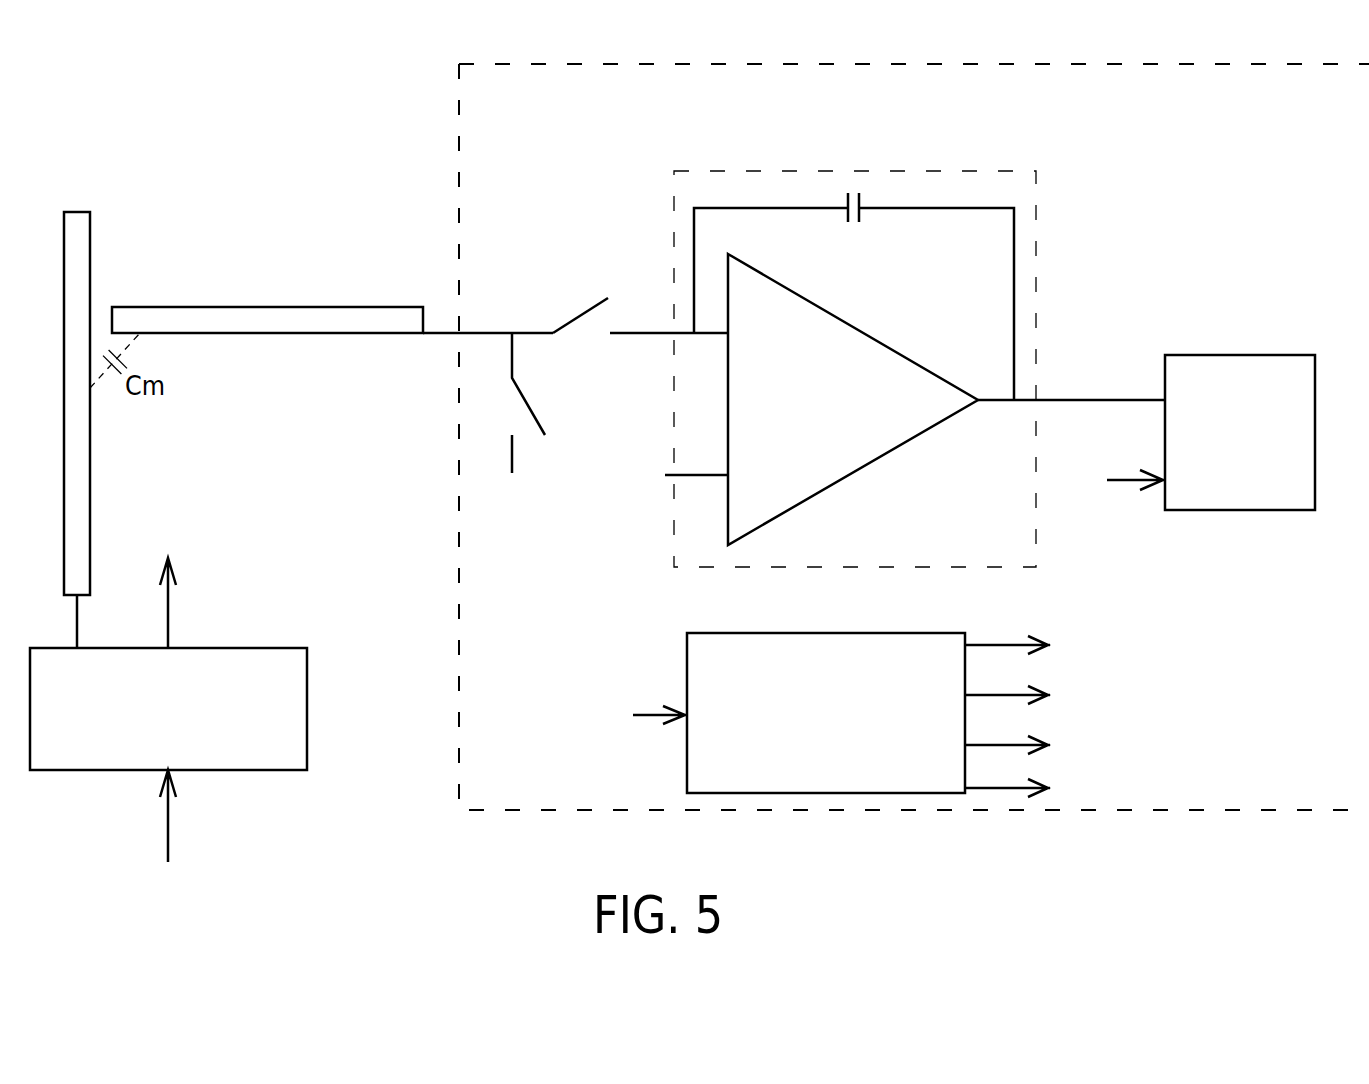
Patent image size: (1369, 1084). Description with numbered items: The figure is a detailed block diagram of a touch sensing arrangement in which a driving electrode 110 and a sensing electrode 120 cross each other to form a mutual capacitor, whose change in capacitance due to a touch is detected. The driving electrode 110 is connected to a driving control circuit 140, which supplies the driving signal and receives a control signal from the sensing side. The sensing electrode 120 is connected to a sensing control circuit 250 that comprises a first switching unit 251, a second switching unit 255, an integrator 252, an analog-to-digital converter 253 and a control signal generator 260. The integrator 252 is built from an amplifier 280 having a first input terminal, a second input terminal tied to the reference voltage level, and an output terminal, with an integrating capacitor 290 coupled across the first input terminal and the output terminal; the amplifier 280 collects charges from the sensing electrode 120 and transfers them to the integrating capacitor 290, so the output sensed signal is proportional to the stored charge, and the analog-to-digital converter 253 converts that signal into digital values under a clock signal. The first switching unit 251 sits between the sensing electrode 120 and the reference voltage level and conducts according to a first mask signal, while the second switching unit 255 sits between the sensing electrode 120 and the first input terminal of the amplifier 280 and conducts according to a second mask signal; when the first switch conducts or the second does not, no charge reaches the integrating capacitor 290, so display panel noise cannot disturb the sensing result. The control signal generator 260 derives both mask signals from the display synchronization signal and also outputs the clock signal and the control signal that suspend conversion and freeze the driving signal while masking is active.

The driving electrode 110 is at (78, 212).
The sensing electrode 120 is at (333, 307).
The driving control circuit 140 is at (307, 712).
The sensing control circuit 250 is at (1141, 811).
The first switching unit 251 is at (515, 410).
The integrator 252 is at (859, 362).
The analog-to-digital converter 253 is at (1287, 355).
The second switching unit 255 is at (617, 327).
The control signal generator 260 is at (848, 633).
The amplifier 280 is at (878, 340).
The integrating capacitor 290 is at (857, 222).